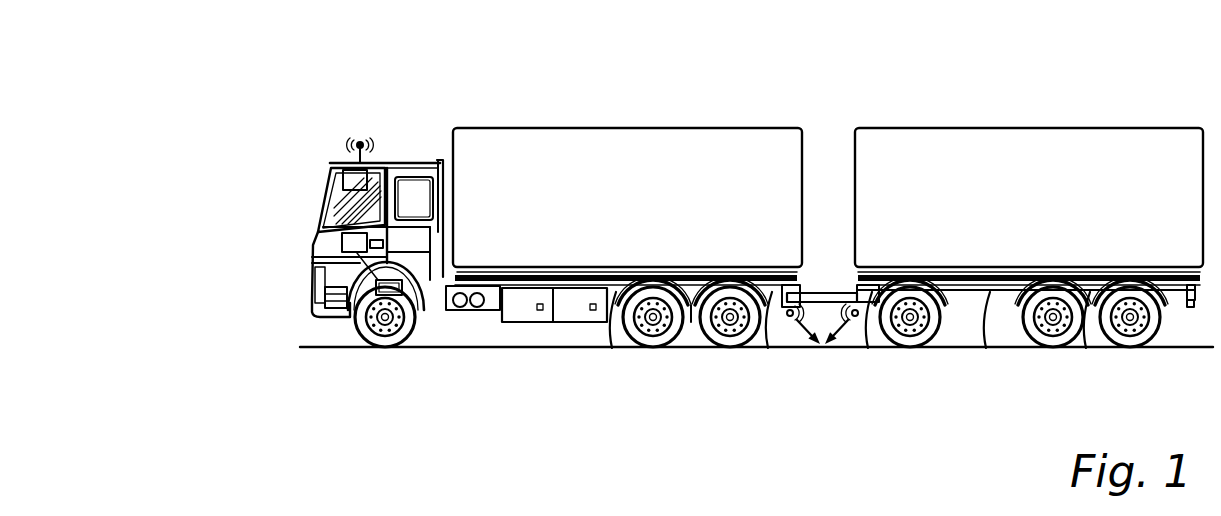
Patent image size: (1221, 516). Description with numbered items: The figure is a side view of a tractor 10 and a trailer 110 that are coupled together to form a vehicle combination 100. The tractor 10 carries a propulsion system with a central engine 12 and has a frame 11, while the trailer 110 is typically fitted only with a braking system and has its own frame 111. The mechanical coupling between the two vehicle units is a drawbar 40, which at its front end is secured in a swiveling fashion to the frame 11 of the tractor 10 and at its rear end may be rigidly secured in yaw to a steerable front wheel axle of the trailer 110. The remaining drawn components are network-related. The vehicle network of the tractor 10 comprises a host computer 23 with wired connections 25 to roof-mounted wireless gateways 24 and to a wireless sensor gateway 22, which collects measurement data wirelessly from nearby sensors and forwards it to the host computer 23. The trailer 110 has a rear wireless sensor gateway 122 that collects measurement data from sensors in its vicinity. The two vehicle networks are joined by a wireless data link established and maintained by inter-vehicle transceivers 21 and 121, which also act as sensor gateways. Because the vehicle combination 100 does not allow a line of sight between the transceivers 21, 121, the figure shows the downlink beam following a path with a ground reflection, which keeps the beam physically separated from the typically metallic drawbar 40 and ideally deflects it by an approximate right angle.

The vehicle combination 100 is at (312, 88).
The tractor 10 is at (312, 295).
The frame 11 is at (614, 335).
The central engine 12 is at (418, 325).
The inter-vehicle transceiver 21 is at (768, 325).
The wireless sensor gateway 22 is at (378, 296).
The host computer 23 is at (343, 254).
The wireless gateway 24 is at (328, 187).
The wired connection 25 is at (345, 225).
The drawbar 40 is at (820, 292).
The trailer 110 is at (1140, 128).
The frame of the trailer 111 is at (988, 330).
The inter-vehicle transceiver 121 is at (868, 332).
The rear wireless sensor gateway 122 is at (1083, 330).